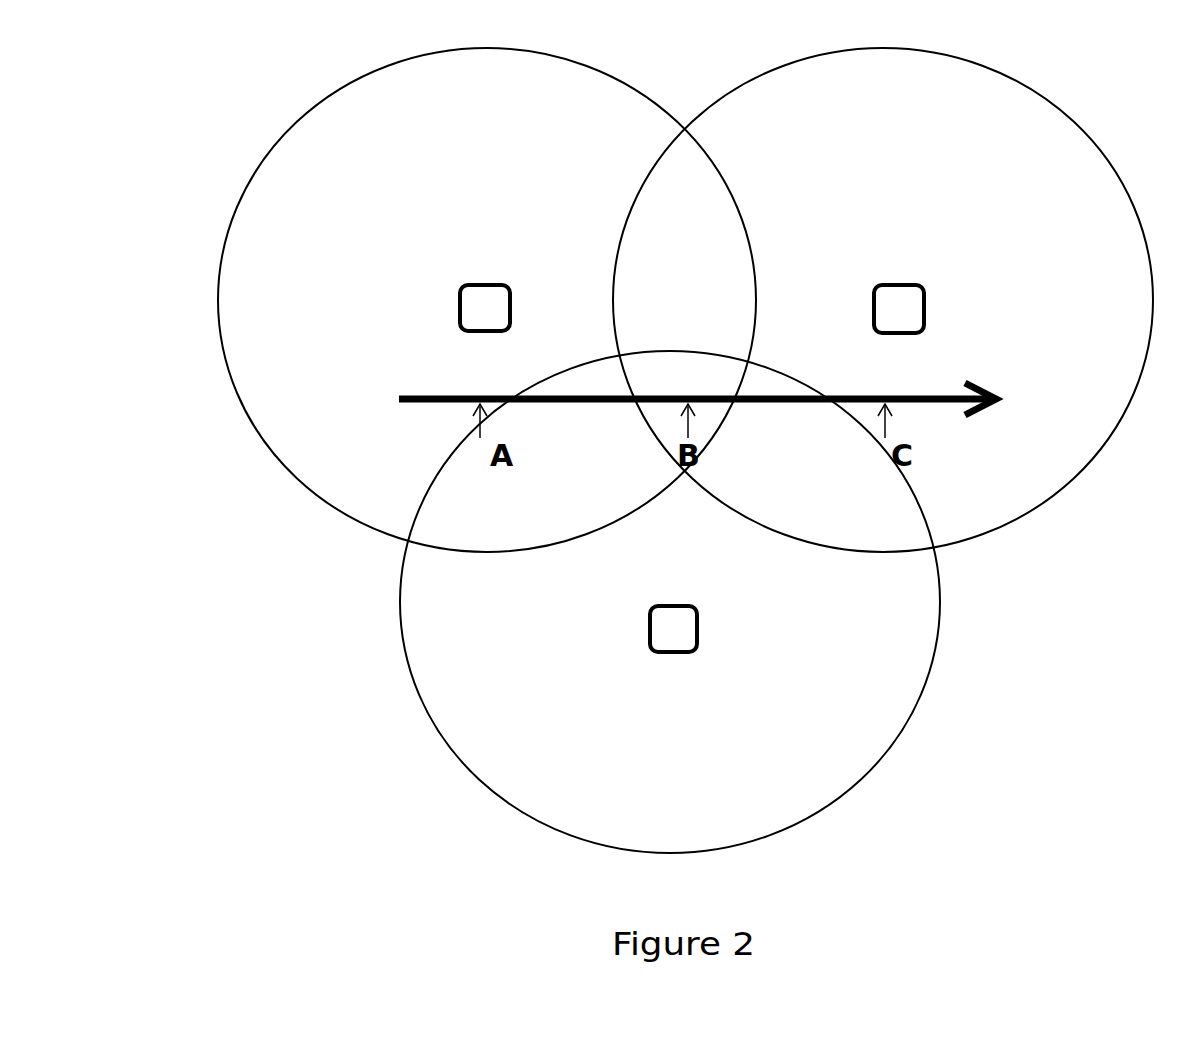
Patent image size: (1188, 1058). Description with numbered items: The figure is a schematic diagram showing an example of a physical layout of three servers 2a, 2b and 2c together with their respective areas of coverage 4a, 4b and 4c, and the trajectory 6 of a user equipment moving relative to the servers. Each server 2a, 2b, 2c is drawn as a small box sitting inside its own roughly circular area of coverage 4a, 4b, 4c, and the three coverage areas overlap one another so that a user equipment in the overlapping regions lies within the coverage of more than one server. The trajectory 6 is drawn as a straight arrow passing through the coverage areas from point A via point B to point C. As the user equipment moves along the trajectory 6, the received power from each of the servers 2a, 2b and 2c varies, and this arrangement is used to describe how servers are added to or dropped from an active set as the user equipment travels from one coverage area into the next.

The server 2a is at (452, 287).
The server 2b is at (648, 603).
The server 2c is at (865, 292).
The area of coverage 4a is at (247, 185).
The area of coverage 4b is at (938, 663).
The area of coverage 4c is at (1072, 485).
The trajectory 6 is at (415, 390).